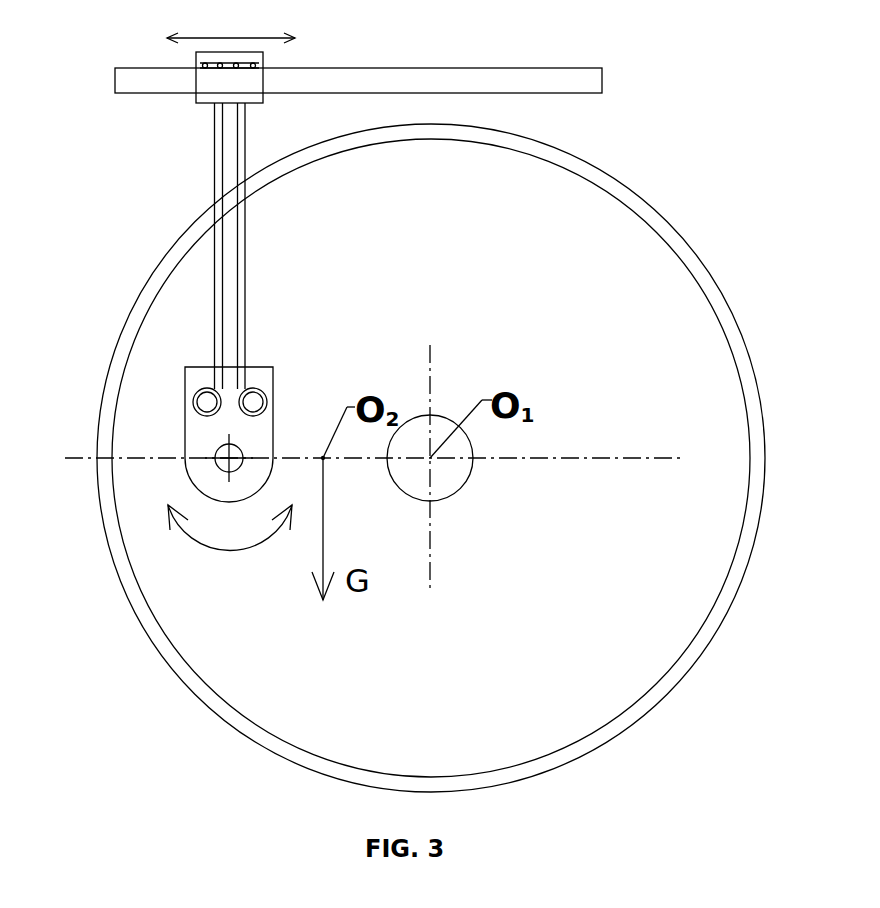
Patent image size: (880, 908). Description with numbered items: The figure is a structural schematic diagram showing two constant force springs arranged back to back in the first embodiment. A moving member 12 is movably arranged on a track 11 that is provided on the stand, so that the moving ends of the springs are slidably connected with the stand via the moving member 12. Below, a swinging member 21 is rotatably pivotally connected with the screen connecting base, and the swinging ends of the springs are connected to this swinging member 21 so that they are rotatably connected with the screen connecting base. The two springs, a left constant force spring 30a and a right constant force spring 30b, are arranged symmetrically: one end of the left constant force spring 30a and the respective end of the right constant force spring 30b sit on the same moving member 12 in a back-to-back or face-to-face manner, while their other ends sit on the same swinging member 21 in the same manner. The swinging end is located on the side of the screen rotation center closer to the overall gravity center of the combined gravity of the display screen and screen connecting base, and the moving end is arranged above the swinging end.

The track 11 is at (568, 78).
The moving member 12 is at (198, 103).
The swinging member 21 is at (200, 447).
The left constant force spring 30a is at (243, 227).
The right constant force spring 30b is at (213, 308).